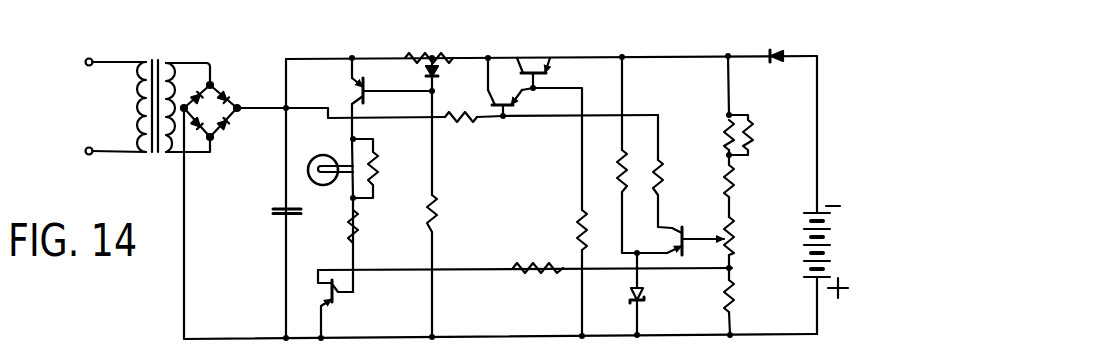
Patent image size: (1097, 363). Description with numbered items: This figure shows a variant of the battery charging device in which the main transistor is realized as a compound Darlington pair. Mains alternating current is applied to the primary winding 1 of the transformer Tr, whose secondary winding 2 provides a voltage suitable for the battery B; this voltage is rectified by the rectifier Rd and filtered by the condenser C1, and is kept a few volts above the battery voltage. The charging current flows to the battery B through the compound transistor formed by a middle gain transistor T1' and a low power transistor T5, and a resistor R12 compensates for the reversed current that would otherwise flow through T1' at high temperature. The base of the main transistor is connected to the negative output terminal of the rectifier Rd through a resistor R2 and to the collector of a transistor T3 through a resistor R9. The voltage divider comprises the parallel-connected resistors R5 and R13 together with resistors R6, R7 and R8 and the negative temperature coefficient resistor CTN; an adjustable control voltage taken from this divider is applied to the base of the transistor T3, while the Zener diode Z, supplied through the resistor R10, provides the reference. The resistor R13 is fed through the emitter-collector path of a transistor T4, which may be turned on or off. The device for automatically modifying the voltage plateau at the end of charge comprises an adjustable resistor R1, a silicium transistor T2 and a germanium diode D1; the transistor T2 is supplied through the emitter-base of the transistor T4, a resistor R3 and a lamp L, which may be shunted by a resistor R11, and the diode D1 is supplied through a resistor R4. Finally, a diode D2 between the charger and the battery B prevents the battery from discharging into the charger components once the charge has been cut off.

The transformer Tr is at (166, 42).
The primary winding 1 is at (138, 86).
The secondary winding 2 is at (170, 84).
The rectifier Rd is at (227, 93).
The condenser C1 is at (281, 208).
The silicium transistor T2 is at (355, 94).
The germanium diode D1 is at (428, 76).
The adjustable resistor R1 is at (446, 55).
The low power transistor T5 is at (490, 102).
The middle gain transistor T1' is at (533, 48).
The resistor R2 is at (455, 122).
The resistor R11 is at (379, 168).
The lamp L is at (312, 183).
The resistor R3 is at (370, 228).
The resistor R4 is at (436, 226).
The transistor T4 is at (327, 307).
The resistor R13 is at (537, 272).
The resistor R12 is at (580, 210).
The resistor R10 is at (621, 172).
The resistor R9 is at (661, 193).
The transistor T3 is at (690, 212).
The Zener diode Z is at (644, 291).
The resistor R8 is at (725, 131).
The negative temperature coefficient resistor CTN is at (750, 136).
The resistor R7 is at (735, 184).
The resistor R6 is at (735, 228).
The resistor R5 is at (737, 293).
The diode D2 is at (787, 36).
The battery B is at (824, 258).